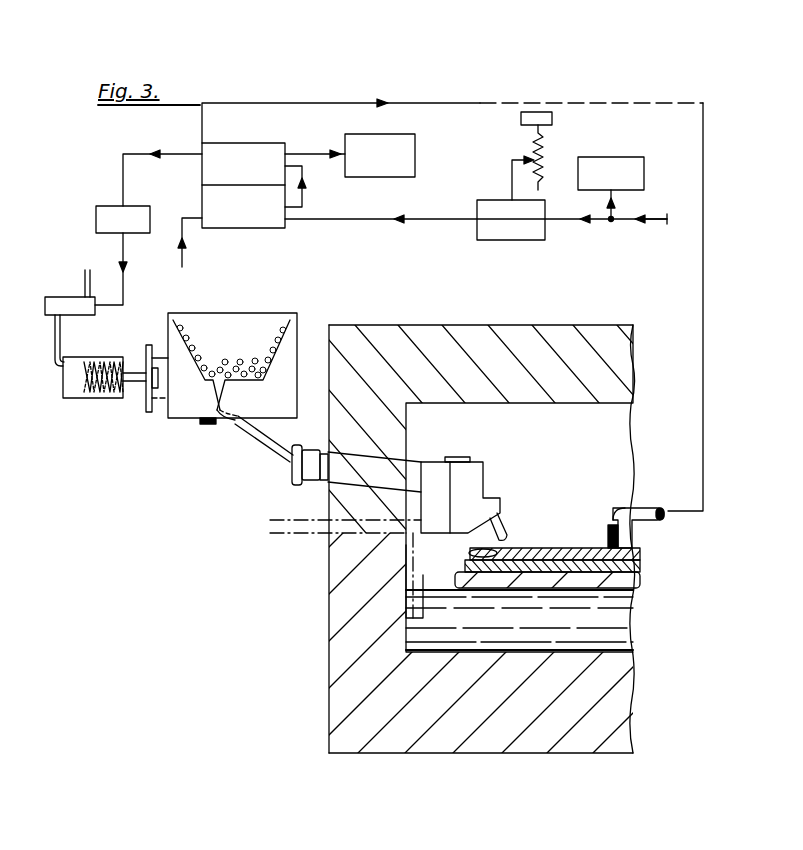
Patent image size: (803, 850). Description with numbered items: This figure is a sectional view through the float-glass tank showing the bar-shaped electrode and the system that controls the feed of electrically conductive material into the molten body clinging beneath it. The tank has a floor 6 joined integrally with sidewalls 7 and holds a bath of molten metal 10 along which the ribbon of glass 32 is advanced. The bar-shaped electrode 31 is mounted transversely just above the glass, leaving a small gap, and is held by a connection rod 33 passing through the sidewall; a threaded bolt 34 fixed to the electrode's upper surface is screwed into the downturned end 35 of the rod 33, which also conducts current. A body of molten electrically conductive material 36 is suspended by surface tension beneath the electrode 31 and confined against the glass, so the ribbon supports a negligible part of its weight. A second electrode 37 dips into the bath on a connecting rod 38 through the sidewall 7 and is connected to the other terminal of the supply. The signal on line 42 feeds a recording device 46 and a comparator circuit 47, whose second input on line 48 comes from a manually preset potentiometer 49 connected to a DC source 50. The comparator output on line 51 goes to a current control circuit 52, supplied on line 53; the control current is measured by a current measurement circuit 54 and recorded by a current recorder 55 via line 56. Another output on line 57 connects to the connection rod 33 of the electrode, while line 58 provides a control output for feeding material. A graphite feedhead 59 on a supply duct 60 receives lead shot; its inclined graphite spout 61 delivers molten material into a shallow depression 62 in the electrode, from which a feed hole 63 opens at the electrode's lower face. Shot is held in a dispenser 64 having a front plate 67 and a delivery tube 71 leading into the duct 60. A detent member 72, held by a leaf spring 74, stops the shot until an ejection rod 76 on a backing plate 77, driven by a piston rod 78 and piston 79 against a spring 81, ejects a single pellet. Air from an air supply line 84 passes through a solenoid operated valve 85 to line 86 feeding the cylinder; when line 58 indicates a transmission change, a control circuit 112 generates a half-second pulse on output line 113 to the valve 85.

The floor 6 is at (630, 706).
The sidewalls 7 is at (328, 565).
The bath of molten metal 10 is at (625, 636).
The bar-shaped electrode 31 is at (565, 540).
The ribbon of glass 32 is at (640, 580).
The connection rod 33 is at (648, 508).
The threaded bolt 34 is at (608, 540).
The downturned end 35 is at (612, 516).
The body of molten electrically conductive material 36 is at (640, 562).
The second electrode 37 is at (418, 575).
The connecting rod 38 is at (294, 521).
The line 42 is at (640, 222).
The recording device 46 is at (640, 170).
The comparator circuit 47 is at (540, 208).
The line 48 is at (512, 176).
The manually preset potentiometer 49 is at (546, 160).
The DC source 50 is at (553, 120).
The line 51 is at (450, 222).
The current control circuit 52 is at (283, 228).
The line 53 is at (183, 255).
The current measurement circuit 54 is at (258, 160).
The current recorder 55 is at (416, 153).
The line 56 is at (310, 154).
The line 57 is at (432, 103).
The line 58 is at (166, 154).
The graphite feedhead 59 is at (493, 470).
The supply duct 60 is at (402, 466).
The graphite spout 61 is at (506, 528).
The shallow depression 62 is at (502, 548).
The feed hole 63 is at (470, 553).
The dispenser 64 is at (278, 324).
The front plate 67 is at (214, 318).
The delivery tube 71 is at (270, 448).
The detent member 72 is at (208, 424).
The leaf spring 74 is at (228, 422).
The ejection rod 76 is at (150, 412).
The backing plate 77 is at (150, 364).
The piston rod 78 is at (137, 383).
The piston 79 is at (80, 396).
The spring 81 is at (106, 398).
The air supply line 84 is at (85, 282).
The solenoid operated valve 85 is at (88, 312).
The line 86 is at (58, 362).
The control circuit 112 is at (134, 215).
The output line 113 is at (124, 290).